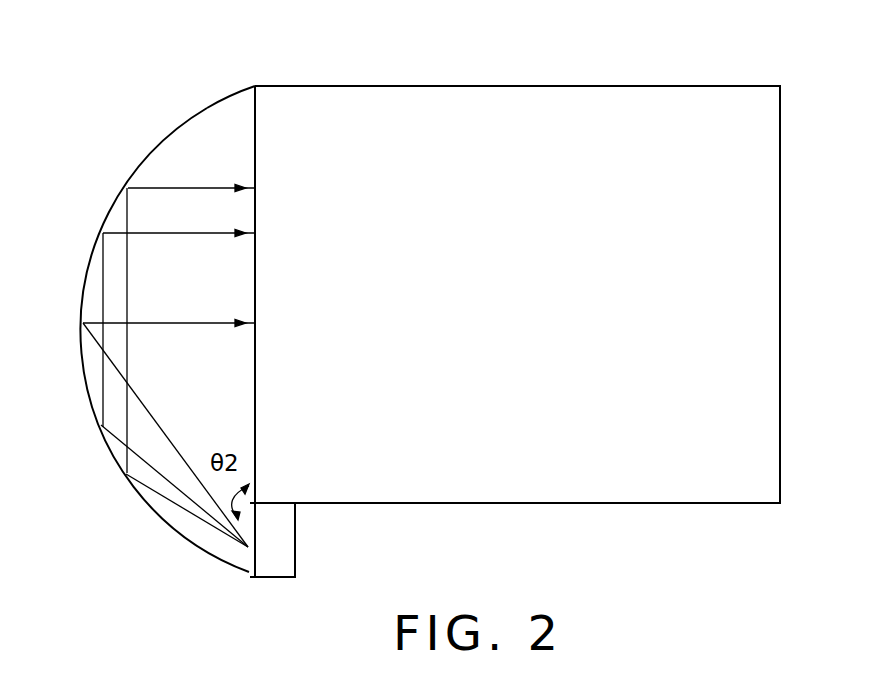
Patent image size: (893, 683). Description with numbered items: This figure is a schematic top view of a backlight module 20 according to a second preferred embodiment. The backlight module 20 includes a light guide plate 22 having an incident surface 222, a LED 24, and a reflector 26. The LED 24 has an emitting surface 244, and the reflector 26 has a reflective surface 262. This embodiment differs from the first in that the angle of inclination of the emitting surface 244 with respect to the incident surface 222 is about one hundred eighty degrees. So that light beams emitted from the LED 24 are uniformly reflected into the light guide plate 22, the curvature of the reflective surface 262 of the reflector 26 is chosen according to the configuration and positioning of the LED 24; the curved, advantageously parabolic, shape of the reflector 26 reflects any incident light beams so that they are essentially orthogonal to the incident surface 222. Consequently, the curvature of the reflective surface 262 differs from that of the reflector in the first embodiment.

The backlight module 20 is at (448, 48).
The light guide plate 22 is at (757, 84).
The LED 24 is at (280, 541).
The reflector 26 is at (104, 210).
The incident surface 222 is at (255, 150).
The emitting surface 244 is at (248, 567).
The reflective surface 262 is at (208, 105).